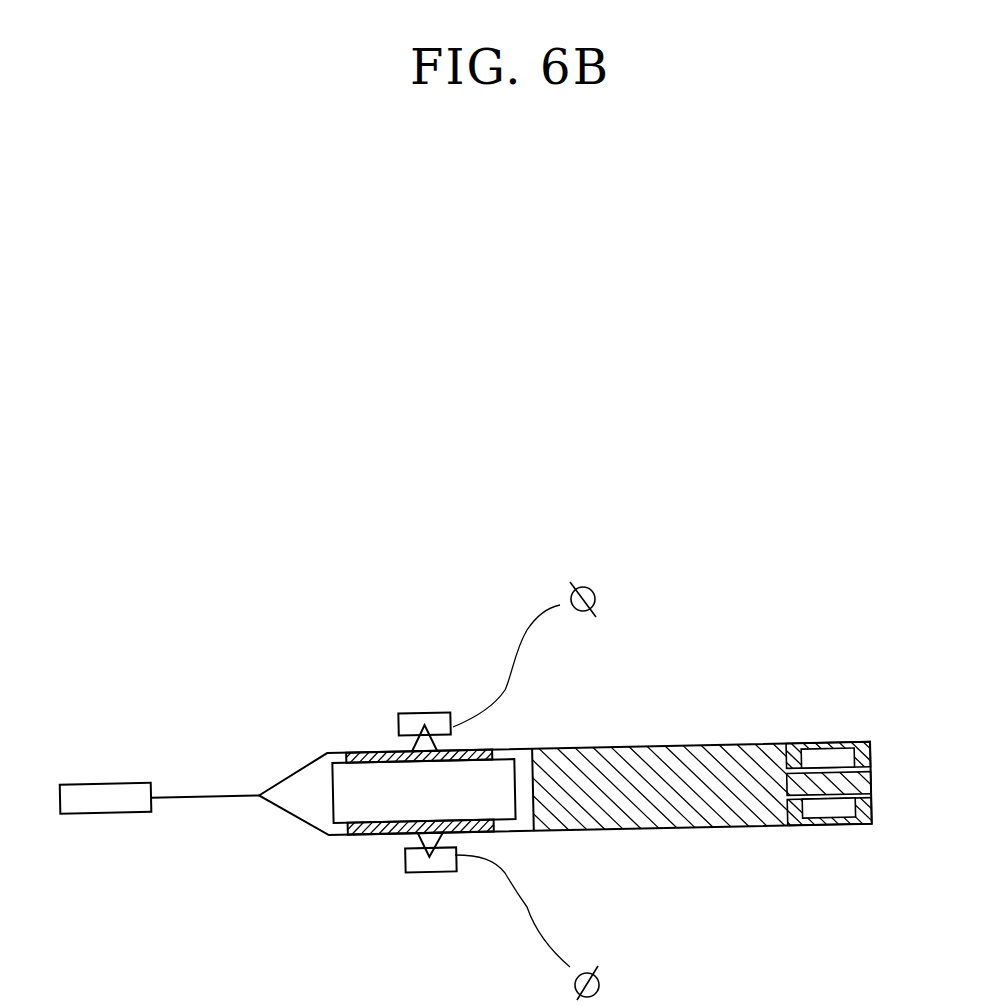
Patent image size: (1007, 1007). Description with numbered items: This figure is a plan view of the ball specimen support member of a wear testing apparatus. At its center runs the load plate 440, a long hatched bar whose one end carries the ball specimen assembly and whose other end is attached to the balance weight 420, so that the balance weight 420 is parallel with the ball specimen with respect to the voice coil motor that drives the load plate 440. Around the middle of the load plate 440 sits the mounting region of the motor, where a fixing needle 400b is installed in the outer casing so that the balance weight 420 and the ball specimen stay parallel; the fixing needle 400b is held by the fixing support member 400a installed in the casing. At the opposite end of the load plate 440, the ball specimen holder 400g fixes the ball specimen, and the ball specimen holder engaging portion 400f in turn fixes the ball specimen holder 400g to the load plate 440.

The balance weight 420 is at (93, 802).
The fixing needle 400b is at (398, 840).
The fixing support member 400a is at (428, 872).
The load plate 440 is at (705, 828).
The ball specimen holder engaging portion 400f is at (872, 784).
The ball specimen holder 400g is at (825, 755).